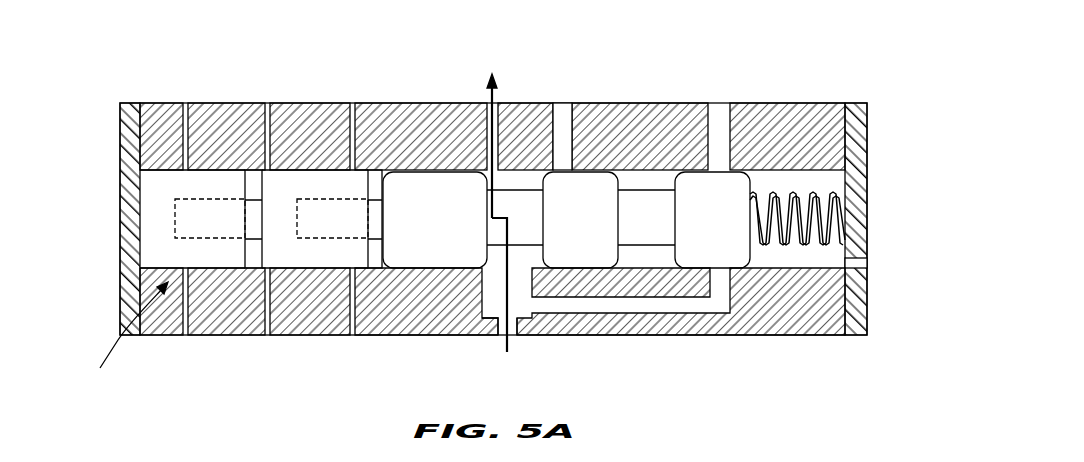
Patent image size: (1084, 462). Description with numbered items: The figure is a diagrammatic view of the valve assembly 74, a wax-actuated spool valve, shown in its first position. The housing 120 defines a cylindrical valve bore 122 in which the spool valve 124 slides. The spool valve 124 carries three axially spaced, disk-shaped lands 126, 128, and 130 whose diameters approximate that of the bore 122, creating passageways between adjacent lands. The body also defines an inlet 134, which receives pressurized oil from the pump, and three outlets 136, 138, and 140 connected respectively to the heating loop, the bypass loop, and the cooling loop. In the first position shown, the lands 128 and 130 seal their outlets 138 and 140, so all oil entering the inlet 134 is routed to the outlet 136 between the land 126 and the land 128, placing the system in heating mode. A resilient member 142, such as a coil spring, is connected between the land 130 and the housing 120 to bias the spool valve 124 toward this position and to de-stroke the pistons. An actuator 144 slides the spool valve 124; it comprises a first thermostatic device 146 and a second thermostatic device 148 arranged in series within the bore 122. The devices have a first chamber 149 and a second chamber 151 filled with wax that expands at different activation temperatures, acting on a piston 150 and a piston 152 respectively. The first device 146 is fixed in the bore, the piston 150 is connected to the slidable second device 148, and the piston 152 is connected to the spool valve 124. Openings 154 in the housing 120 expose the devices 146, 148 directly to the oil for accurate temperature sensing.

The valve assembly 74 is at (870, 88).
The housing 120 is at (132, 126).
The valve bore 122 is at (647, 272).
The spool valve 124 is at (640, 193).
The land 126 is at (433, 177).
The land 128 is at (587, 192).
The land 130 is at (716, 178).
The inlet 134 is at (512, 321).
The outlet 136 is at (487, 94).
The outlet 138 is at (562, 127).
The outlet 140 is at (720, 113).
The resilient member 142 is at (807, 245).
The actuator 144 is at (119, 337).
The first thermostatic device 146 is at (207, 270).
The second thermostatic device 148 is at (285, 258).
The first chamber 149 is at (172, 187).
The piston 150 is at (253, 225).
The second chamber 151 is at (330, 255).
The piston 152 is at (375, 225).
The openings 154 is at (185, 134).